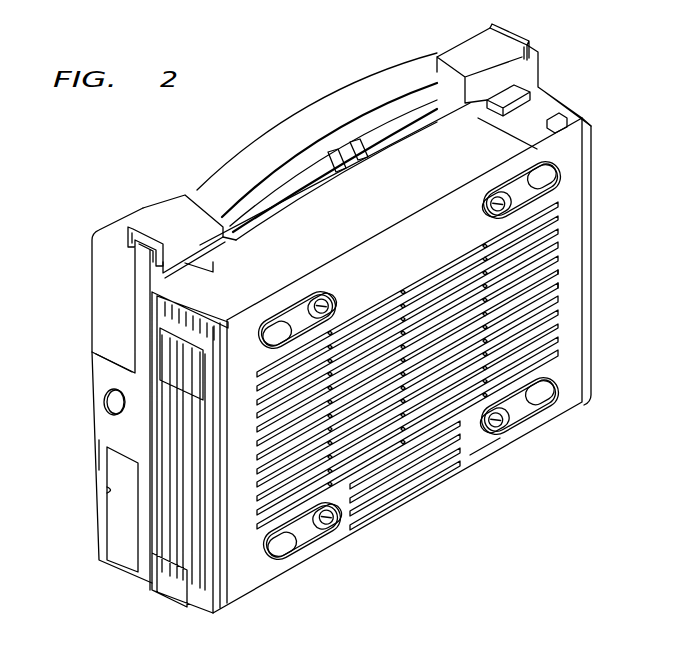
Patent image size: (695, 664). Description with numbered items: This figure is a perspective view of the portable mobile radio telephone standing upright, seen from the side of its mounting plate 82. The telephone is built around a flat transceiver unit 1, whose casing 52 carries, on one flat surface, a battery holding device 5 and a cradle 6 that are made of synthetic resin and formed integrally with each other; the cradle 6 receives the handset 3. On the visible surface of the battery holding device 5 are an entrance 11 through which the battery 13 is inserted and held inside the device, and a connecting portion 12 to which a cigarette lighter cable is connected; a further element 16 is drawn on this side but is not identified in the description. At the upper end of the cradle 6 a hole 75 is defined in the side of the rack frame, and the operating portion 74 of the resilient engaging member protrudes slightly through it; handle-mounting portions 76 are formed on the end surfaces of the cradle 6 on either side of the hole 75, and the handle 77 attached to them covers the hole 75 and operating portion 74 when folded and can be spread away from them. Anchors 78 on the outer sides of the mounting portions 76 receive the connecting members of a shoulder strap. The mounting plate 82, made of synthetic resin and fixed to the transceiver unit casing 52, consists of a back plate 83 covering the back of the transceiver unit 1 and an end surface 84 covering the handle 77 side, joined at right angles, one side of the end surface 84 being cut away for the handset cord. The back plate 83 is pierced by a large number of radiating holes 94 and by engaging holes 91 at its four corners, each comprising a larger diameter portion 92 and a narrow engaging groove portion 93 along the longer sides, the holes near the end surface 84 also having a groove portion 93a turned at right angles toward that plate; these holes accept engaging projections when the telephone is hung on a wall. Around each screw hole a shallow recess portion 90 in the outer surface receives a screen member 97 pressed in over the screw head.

The transceiver unit 1 is at (230, 608).
The handset 3 is at (90, 258).
The battery holding device 5 is at (100, 440).
The cradle 6 is at (128, 330).
The entrance 11 is at (110, 490).
The connecting portion 12 is at (106, 398).
The battery 13 is at (118, 520).
The side panel 16 is at (108, 294).
The transceiver unit casing 52 is at (470, 470).
The operating portion 74 is at (354, 140).
The hole 75 is at (330, 152).
The handle-mounting portions 76 is at (183, 200).
The handle 77 is at (322, 100).
The anchors 78 is at (133, 228).
The mounting plate 82 is at (442, 373).
The back plate 83 is at (425, 468).
The end surface 84 is at (263, 233).
The recess portion 90 is at (283, 560).
The engaging hole 91 is at (322, 298).
The larger diameter portion 92 is at (333, 290).
The engaging groove portion 93 is at (305, 315).
The engaging groove portion 93a is at (320, 310).
The radiating holes 94 is at (555, 337).
The screen member 97 is at (550, 177).